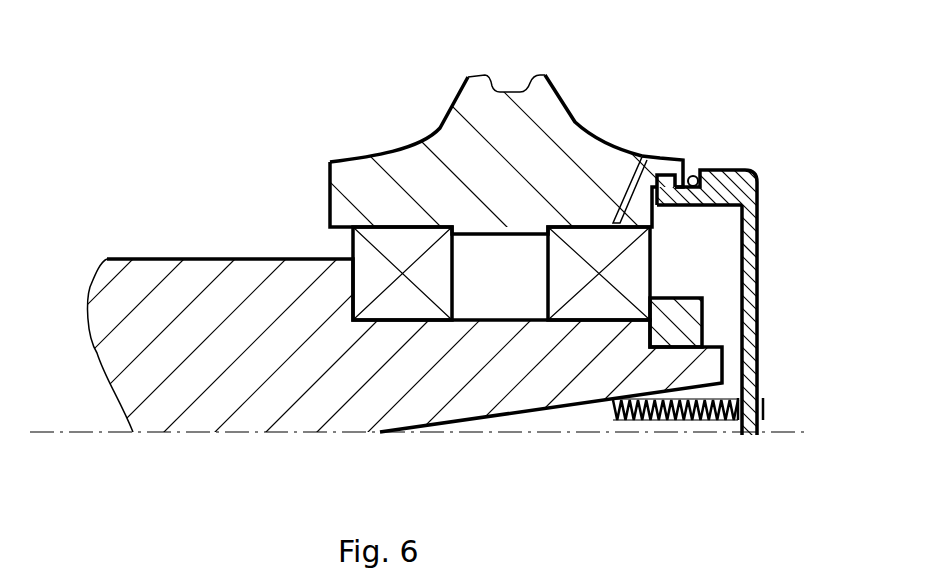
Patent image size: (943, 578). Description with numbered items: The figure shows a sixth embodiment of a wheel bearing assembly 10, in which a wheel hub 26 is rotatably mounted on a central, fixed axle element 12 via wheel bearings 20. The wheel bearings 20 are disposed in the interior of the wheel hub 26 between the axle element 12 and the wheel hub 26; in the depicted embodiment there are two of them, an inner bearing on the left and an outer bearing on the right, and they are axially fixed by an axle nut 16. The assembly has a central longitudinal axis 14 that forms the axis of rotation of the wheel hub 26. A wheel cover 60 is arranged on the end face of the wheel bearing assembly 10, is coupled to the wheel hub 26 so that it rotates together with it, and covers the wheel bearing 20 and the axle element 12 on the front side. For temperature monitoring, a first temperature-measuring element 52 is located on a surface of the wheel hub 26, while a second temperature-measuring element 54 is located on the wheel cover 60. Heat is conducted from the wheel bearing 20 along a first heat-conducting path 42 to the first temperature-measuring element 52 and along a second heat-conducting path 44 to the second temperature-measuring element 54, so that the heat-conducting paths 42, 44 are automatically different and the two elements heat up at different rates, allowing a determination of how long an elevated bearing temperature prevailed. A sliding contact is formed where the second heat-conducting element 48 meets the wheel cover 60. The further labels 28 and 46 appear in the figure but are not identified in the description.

The wheel bearing assembly 10 is at (273, 127).
The axle element 12 is at (181, 410).
The longitudinal axis 14 is at (270, 430).
The axle nut 16 is at (673, 317).
The wheel bearings 20 is at (372, 256).
The wheel hub 26 is at (410, 158).
The outer surface of rotating body 28 is at (585, 128).
The first heat-conducting path 42 is at (660, 160).
The second heat-conducting path 44 is at (674, 422).
The seal 46 is at (719, 150).
The second heat-conducting element 48 is at (675, 460).
The first temperature-measuring element 52 is at (642, 153).
The second temperature-measuring element 54 is at (738, 408).
The wheel cover 60 is at (750, 338).